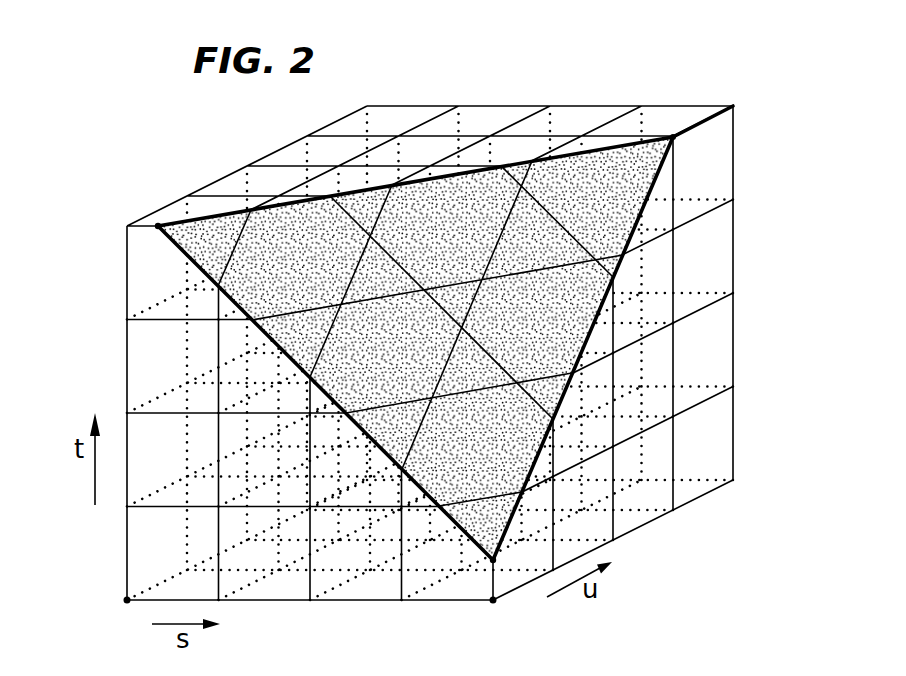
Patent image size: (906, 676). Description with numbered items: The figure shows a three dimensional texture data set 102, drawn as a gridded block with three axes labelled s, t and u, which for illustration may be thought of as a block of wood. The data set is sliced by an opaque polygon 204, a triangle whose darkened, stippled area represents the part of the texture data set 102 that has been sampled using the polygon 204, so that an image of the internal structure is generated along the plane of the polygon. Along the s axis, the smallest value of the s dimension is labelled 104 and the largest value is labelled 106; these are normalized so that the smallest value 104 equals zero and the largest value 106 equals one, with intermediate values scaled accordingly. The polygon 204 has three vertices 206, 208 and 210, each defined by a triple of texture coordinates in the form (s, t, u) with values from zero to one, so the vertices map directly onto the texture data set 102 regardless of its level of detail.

The 3D texture data set 102 is at (662, 88).
The smallest value of the s dimension 104 is at (127, 600).
The largest value of the s dimension 106 is at (493, 601).
The opaque polygon 204 is at (657, 183).
The vertex 206 is at (158, 226).
The vertex 208 is at (673, 138).
The vertex 210 is at (492, 560).